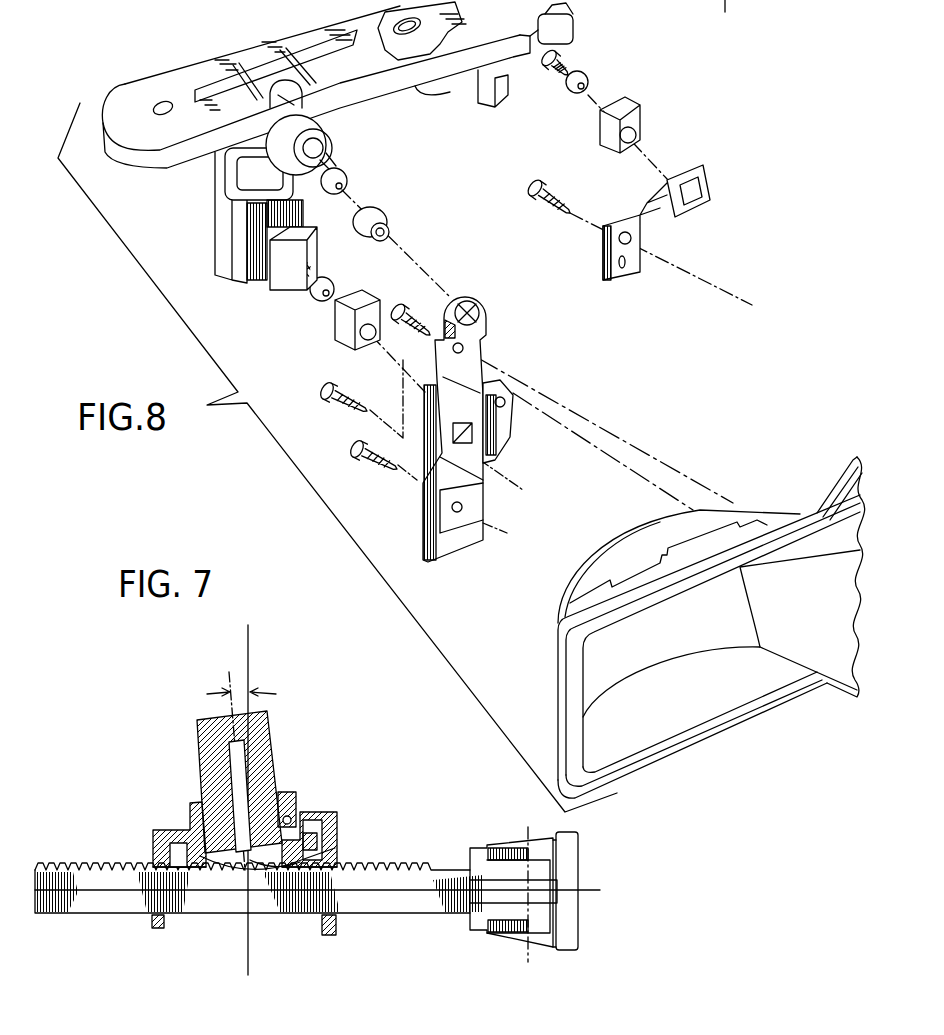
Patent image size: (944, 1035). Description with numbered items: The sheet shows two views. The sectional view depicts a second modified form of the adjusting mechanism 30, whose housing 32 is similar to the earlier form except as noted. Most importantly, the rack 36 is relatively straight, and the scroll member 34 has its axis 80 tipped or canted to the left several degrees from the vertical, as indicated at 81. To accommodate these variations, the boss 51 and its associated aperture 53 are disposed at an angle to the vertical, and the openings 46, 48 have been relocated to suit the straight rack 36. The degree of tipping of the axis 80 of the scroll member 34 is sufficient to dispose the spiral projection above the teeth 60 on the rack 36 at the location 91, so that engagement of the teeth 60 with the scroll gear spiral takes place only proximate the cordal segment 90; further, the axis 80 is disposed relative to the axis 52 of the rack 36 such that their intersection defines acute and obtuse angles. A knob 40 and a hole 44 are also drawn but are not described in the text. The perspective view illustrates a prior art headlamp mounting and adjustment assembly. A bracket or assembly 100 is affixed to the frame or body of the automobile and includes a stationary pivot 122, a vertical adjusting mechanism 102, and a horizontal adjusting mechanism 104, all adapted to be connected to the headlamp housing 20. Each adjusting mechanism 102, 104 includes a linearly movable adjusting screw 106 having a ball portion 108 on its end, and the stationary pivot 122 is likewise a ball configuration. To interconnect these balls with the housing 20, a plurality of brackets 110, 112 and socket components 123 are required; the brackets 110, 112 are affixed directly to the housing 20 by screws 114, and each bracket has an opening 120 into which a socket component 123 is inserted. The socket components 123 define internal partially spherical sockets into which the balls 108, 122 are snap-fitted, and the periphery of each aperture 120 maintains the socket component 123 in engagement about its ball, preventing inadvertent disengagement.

In FIG. 8, the headlamp housing 20 is at (727, 512).
In FIG. 7, the adjusting mechanism 30 is at (327, 768).
In FIG. 7, the housing 32 is at (350, 831).
In FIG. 7, the scroll member 34 is at (208, 740).
In FIG. 7, the rack 36 is at (403, 905).
In FIG. 7, the adjusting knob 40 is at (510, 942).
In FIG. 8, the mounting hole 44 is at (400, 22).
In FIG. 7, the opening 46 is at (177, 915).
In FIG. 7, the opening 48 is at (334, 902).
In FIG. 7, the boss 51 is at (287, 797).
In FIG. 7, the axis of the rack 52 is at (85, 882).
In FIG. 7, the aperture 53 is at (290, 812).
In FIG. 7, the teeth 60 is at (67, 866).
In FIG. 7, the axis 80 is at (230, 683).
In FIG. 7, the angle of tipping 81 is at (243, 683).
In FIG. 7, the cordal segment 90 is at (175, 887).
In FIG. 7, the location 91 is at (305, 880).
In FIG. 8, the bracket or assembly 100 is at (178, 86).
In FIG. 8, the vertical adjusting mechanism 102 is at (250, 270).
In FIG. 8, the horizontal adjusting mechanism 104 is at (575, 40).
In FIG. 8, the adjusting screw 106 is at (570, 58).
In FIG. 8, the ball portion 108 is at (572, 92).
In FIG. 8, the bracket 110 is at (476, 365).
In FIG. 8, the bracket 112 is at (612, 282).
In FIG. 8, the screws 114 is at (530, 183).
In FIG. 8, the opening 120 is at (485, 308).
In FIG. 8, the stationary pivot 122 is at (343, 172).
In FIG. 8, the socket component 123 is at (388, 217).